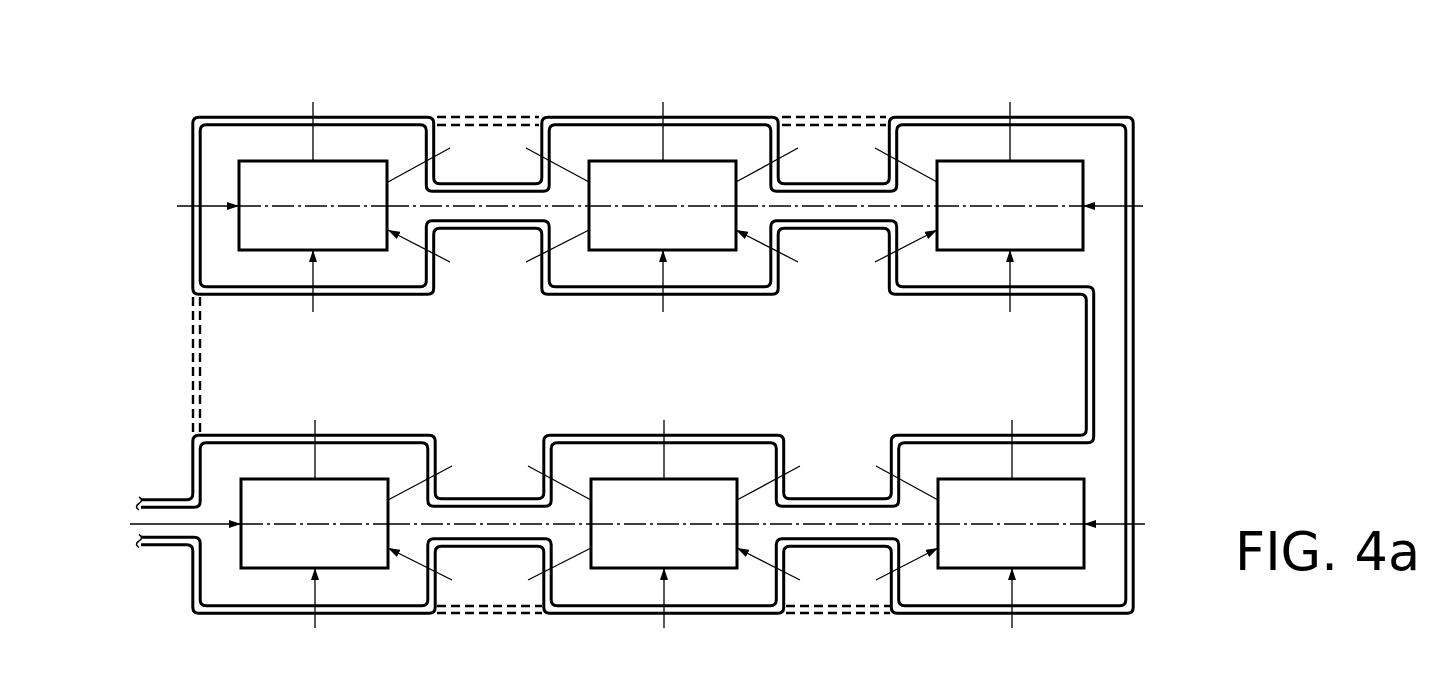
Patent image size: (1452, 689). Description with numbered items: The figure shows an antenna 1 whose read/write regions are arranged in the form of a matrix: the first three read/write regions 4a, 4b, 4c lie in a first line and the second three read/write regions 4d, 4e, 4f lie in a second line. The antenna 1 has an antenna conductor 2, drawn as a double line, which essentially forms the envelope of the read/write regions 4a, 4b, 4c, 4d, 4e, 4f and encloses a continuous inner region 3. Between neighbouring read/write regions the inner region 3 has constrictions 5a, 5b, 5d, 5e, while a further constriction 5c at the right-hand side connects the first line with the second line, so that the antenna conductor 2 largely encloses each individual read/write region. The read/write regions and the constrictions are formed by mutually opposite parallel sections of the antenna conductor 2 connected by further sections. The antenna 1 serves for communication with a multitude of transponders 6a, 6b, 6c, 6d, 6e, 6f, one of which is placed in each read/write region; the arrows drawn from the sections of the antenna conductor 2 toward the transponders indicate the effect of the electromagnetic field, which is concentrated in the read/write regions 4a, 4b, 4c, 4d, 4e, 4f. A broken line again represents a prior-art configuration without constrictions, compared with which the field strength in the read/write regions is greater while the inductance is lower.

The antenna 1 is at (635, 323).
The antenna conductor 2 is at (403, 295).
The inner region 3 is at (487, 202).
The read/write region 4a is at (286, 575).
The read/write region 4b is at (634, 575).
The read/write region 4c is at (983, 573).
The read/write region 4d is at (982, 257).
The read/write region 4e is at (634, 257).
The read/write region 4f is at (285, 257).
The constriction 5a is at (465, 524).
The constriction 5b is at (812, 524).
The constriction 5c is at (1109, 377).
The constriction 5d is at (810, 207).
The constriction 5e is at (462, 207).
The transponder 6a is at (335, 552).
The transponder 6b is at (685, 552).
The transponder 6c is at (1032, 552).
The transponder 6d is at (1030, 232).
The transponder 6e is at (683, 233).
The transponder 6f is at (333, 233).